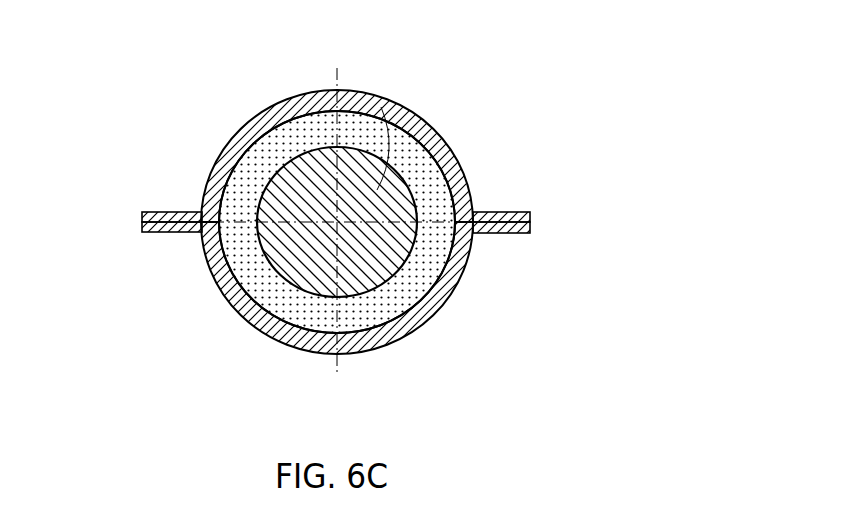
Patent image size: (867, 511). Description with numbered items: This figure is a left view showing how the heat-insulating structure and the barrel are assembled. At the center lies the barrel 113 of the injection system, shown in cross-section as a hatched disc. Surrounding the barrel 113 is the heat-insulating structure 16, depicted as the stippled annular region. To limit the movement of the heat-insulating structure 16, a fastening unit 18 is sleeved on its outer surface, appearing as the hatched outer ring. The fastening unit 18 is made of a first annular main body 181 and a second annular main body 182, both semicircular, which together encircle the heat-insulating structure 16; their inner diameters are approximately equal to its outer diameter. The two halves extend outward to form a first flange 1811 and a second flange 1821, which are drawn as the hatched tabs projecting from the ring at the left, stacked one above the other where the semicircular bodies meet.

The fastening unit 18 is at (458, 222).
The first annular main body 181 is at (458, 192).
The second annular main body 182 is at (455, 267).
The first flange 1811 is at (170, 212).
The second flange 1821 is at (160, 232).
The barrel 113 is at (373, 188).
The heat-insulating structure 16 is at (280, 300).